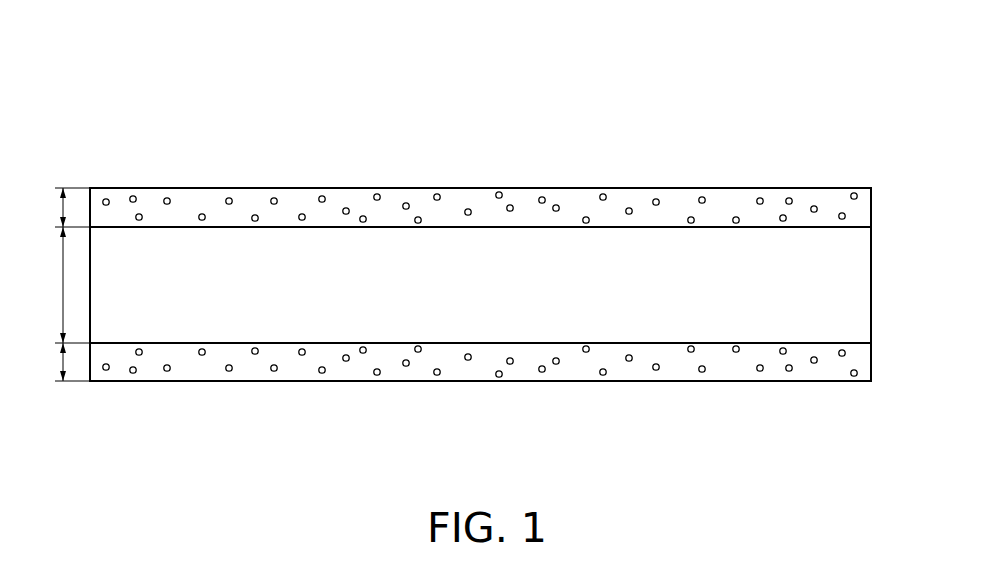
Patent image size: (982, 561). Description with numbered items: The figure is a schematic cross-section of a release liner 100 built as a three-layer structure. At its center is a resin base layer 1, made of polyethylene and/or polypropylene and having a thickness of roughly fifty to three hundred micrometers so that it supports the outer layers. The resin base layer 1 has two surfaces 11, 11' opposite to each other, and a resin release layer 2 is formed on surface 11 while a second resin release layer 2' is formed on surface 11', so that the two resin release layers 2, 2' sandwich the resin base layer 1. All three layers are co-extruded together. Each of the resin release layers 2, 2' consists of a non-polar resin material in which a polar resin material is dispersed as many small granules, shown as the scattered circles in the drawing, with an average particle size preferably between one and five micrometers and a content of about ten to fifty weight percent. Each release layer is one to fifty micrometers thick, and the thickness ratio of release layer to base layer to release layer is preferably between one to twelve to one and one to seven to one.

The release liner 100 is at (119, 79).
The resin base layer 1 is at (855, 279).
The resin release layer 2 is at (503, 178).
The resin release layer 2' is at (507, 395).
The surface 11 is at (480, 181).
The surface 11' is at (480, 390).